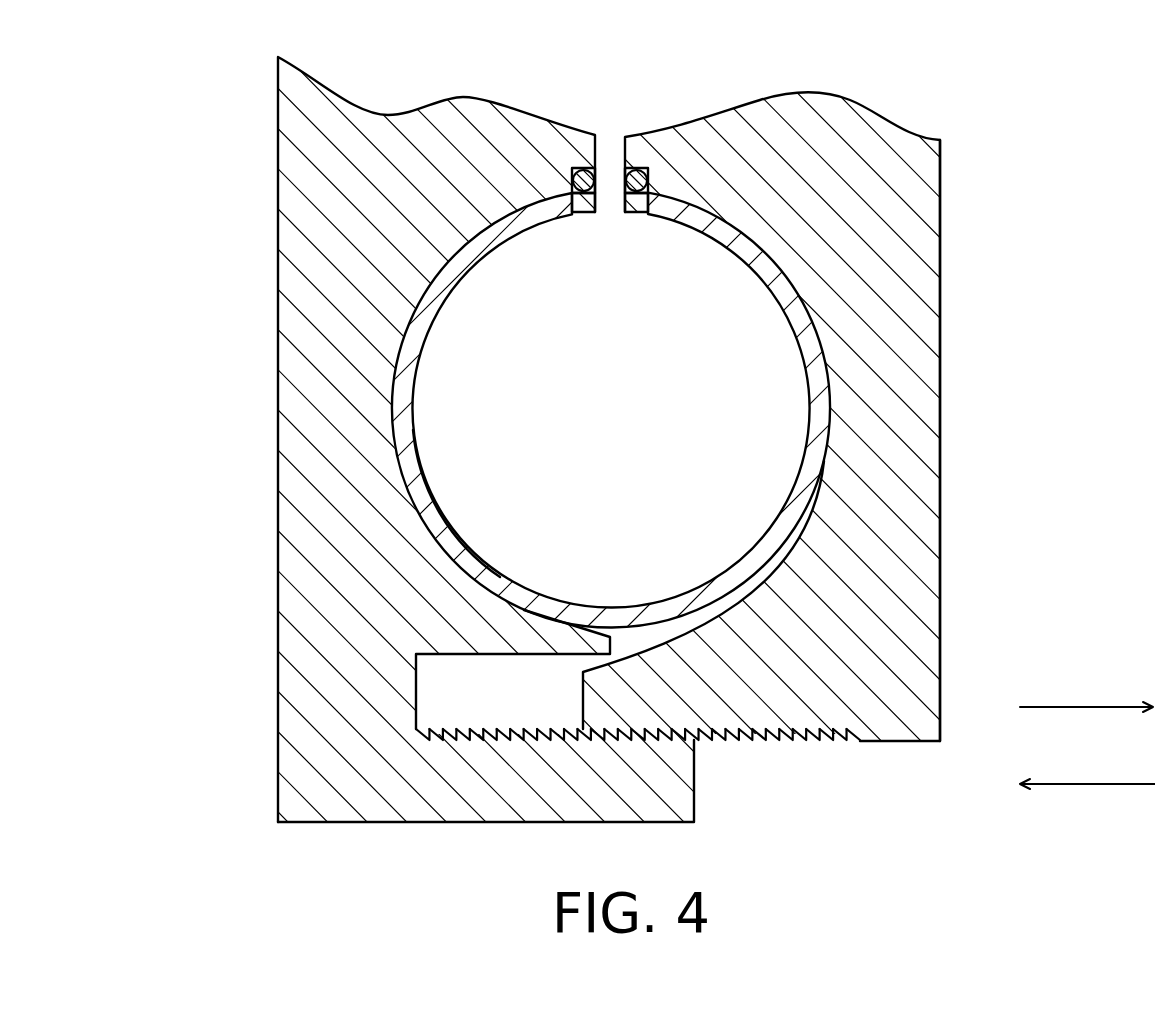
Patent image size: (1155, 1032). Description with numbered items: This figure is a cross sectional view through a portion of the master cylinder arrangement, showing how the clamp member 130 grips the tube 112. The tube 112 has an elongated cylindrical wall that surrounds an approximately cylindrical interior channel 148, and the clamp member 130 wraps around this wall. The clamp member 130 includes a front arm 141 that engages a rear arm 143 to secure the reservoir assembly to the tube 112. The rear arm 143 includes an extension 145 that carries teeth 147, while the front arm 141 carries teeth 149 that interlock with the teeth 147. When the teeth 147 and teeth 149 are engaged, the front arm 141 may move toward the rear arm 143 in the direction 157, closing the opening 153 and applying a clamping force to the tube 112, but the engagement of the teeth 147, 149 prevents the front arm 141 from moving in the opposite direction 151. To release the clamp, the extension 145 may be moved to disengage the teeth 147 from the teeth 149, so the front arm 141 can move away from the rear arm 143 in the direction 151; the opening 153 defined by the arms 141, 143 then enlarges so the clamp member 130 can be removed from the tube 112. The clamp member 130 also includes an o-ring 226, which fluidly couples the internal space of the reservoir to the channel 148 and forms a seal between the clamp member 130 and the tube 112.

The tube 112 is at (722, 246).
The clamp member 130 is at (993, 299).
The front arm 141 is at (941, 523).
The rear arm 143 is at (278, 283).
The extension 145 is at (694, 798).
The teeth 147 is at (485, 728).
The interior channel 148 is at (593, 305).
The teeth 149 is at (806, 742).
The direction 151 is at (1073, 707).
The opening 153 is at (440, 520).
The direction 157 is at (1077, 784).
The o-ring 226 is at (662, 182).